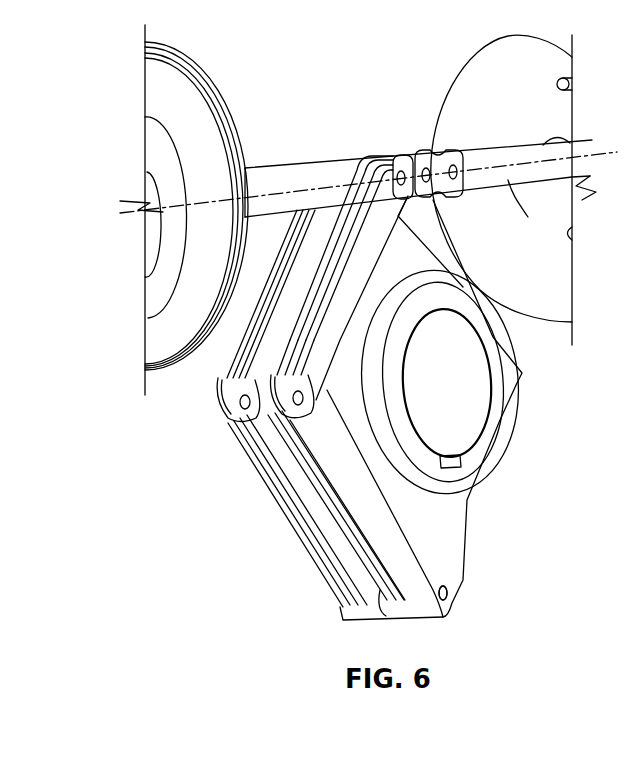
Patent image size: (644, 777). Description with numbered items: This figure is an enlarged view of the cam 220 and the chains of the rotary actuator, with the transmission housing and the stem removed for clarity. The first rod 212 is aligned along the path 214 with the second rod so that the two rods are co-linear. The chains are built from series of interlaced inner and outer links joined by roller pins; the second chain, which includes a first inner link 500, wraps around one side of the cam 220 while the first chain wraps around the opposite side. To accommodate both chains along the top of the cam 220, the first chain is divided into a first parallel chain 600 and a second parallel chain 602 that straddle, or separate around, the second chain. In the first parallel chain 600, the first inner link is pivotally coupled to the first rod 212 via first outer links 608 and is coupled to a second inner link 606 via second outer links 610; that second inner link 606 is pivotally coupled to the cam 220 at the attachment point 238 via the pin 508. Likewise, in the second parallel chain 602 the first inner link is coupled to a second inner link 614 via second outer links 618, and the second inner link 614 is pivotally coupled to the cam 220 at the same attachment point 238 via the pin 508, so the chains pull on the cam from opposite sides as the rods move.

The first rod 212 is at (526, 212).
The path 214 is at (592, 150).
The cam 220 is at (460, 530).
The attachment point 238 is at (448, 600).
The first inner link 500 is at (317, 170).
The pin 508 is at (448, 592).
The first parallel chain 600 is at (340, 480).
The second parallel chain 602 is at (270, 473).
The second inner link 606 is at (350, 520).
The first outer links 608 is at (416, 150).
The second outer links 610 is at (290, 370).
The second inner link 614 is at (250, 440).
The second outer links 618 is at (253, 298).